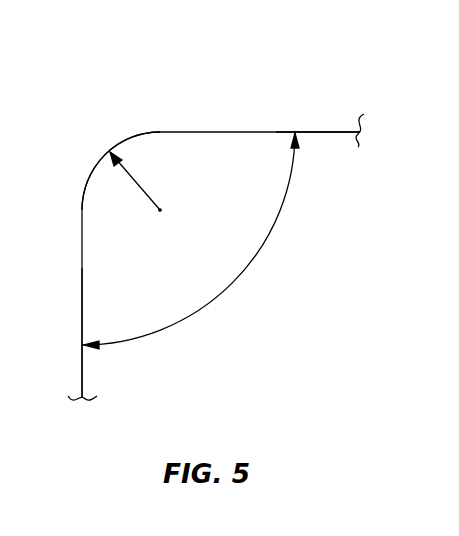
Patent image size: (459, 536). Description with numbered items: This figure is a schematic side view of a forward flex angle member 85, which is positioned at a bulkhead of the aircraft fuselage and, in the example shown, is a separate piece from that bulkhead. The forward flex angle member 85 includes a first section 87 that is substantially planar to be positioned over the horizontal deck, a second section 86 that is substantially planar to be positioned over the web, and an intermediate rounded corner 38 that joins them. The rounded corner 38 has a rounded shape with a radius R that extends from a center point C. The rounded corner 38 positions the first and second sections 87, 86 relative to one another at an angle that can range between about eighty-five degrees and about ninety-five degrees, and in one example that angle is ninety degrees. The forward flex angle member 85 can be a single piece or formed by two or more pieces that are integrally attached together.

The forward flex angle member 85 is at (103, 80).
The second section 86 is at (276, 132).
The first section 87 is at (83, 268).
The rounded corner 38 is at (95, 170).
The radius R is at (140, 183).
The center point C is at (163, 210).